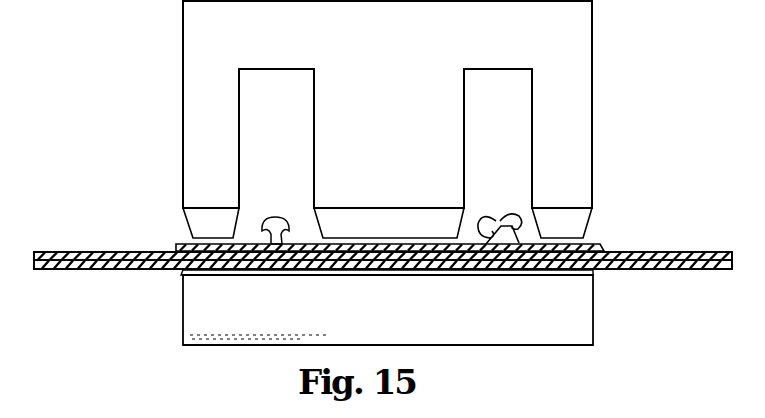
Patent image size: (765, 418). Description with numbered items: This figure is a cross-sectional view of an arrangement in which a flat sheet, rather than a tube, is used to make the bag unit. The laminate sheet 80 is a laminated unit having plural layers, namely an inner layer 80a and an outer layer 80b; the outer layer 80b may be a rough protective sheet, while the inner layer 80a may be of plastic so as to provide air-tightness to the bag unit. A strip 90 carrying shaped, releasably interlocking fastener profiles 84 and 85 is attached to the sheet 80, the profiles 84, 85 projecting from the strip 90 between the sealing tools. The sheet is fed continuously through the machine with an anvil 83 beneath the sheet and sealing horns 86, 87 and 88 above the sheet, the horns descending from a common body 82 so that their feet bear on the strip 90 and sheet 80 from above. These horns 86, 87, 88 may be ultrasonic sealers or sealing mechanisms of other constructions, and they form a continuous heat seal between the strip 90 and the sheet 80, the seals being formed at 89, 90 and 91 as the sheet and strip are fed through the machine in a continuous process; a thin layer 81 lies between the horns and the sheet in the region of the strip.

The laminate sheet 80 is at (381, 262).
The inner layer 80a is at (104, 255).
The outer layer 80b is at (78, 270).
The adhesive layer 81 is at (598, 245).
The component body 82 is at (582, 63).
The anvil 83 is at (583, 330).
The fastener profile 84 is at (280, 218).
The fastener profile 85 is at (492, 216).
The sealing horn 86 is at (183, 213).
The sealing horn 87 is at (402, 216).
The sealing horn 88 is at (582, 213).
The seal 89 is at (182, 276).
The strip 90 is at (388, 264).
The seal 91 is at (593, 270).